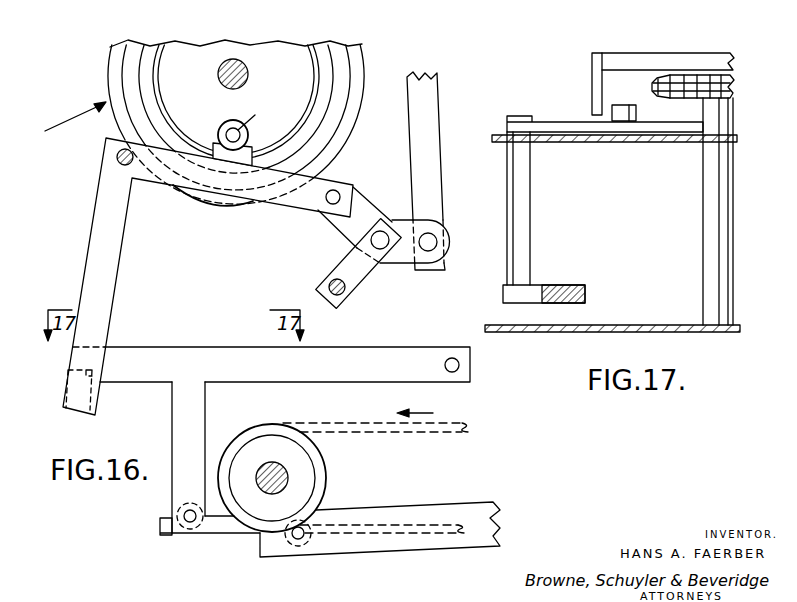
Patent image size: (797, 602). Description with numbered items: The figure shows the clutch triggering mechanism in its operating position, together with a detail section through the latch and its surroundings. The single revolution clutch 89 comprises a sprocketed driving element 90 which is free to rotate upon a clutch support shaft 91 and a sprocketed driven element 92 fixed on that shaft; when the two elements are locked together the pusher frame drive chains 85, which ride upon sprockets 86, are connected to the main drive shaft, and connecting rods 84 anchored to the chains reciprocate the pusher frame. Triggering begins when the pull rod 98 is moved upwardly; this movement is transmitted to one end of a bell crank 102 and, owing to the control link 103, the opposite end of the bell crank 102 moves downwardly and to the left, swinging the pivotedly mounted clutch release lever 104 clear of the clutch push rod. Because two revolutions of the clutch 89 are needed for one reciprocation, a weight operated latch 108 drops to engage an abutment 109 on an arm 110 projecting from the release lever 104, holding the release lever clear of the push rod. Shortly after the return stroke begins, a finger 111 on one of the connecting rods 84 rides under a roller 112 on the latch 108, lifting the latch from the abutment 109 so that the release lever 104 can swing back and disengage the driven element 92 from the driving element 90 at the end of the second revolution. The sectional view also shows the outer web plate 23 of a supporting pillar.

In FIG. 17, the outer web plate 23 is at (627, 325).
In FIG. 16, the connecting rod 84 is at (457, 510).
In FIG. 17, the connecting rod 84 is at (639, 60).
In FIG. 16, the pusher frame drive chain 85 is at (330, 423).
In FIG. 16, the sprocket 86 is at (312, 483).
In FIG. 17, the sprocket 86 is at (687, 87).
In FIG. 16, the single revolution clutch 89 is at (61, 123).
In FIG. 16, the sprocketed driving element 90 is at (348, 62).
In FIG. 16, the clutch support shaft 91 is at (240, 59).
In FIG. 16, the sprocketed driven element 92 is at (236, 102).
In FIG. 16, the pull rod 98 is at (417, 102).
In FIG. 16, the bell crank 102 is at (337, 220).
In FIG. 16, the control link 103 is at (357, 278).
In FIG. 16, the clutch release lever 104 is at (183, 170).
In FIG. 16, the weight operated latch 108 is at (162, 355).
In FIG. 17, the weight operated latch 108 is at (546, 122).
In FIG. 16, the abutment 109 is at (75, 390).
In FIG. 17, the abutment 109 is at (522, 208).
In FIG. 16, the arm 110 is at (90, 240).
In FIG. 17, the arm 110 is at (571, 285).
In FIG. 16, the finger 111 is at (225, 525).
In FIG. 17, the finger 111 is at (593, 58).
In FIG. 16, the roller 112 is at (178, 510).
In FIG. 17, the roller 112 is at (612, 110).